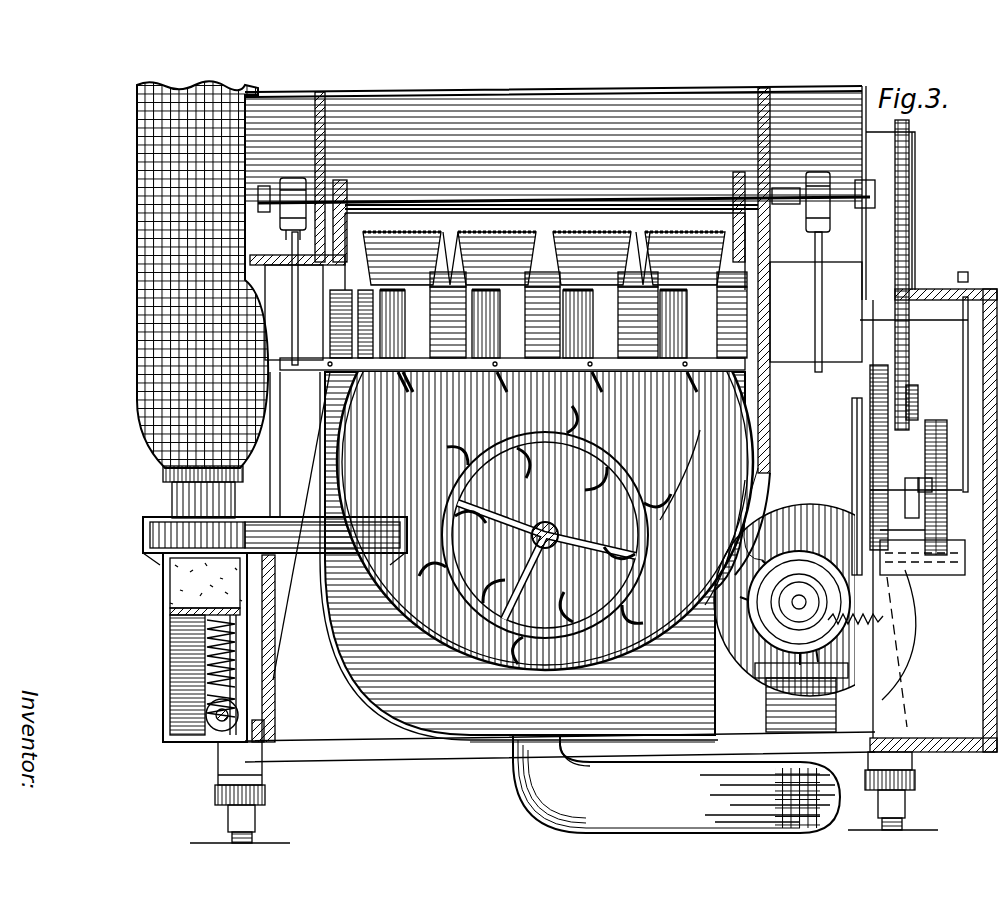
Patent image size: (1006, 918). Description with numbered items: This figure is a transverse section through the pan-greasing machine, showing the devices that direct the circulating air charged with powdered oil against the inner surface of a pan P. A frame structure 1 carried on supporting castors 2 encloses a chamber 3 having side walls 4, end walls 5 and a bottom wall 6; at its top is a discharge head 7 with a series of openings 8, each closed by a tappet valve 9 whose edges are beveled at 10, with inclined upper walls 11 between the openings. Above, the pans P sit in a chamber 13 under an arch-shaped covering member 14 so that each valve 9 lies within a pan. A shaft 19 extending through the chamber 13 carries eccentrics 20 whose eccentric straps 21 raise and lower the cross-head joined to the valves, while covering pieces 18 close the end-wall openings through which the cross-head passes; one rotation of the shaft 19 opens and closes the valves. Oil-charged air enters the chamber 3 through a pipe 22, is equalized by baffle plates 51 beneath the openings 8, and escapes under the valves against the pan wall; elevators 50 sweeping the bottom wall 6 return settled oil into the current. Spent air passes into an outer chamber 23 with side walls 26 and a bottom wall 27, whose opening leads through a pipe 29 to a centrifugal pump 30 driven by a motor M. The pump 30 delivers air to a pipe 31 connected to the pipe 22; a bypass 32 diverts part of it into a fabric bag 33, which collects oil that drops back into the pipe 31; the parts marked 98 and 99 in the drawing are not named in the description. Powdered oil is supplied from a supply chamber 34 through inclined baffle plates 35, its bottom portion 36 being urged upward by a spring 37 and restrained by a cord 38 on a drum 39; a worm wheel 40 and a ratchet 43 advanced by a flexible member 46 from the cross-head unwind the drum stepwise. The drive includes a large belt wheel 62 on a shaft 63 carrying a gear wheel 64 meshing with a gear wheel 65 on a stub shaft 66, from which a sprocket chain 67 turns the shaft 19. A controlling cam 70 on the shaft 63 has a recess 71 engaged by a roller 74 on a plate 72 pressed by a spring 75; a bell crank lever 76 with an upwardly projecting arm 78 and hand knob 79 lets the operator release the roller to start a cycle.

The frame structure 1 is at (388, 752).
The supporting castors 2 is at (250, 820).
The chamber 3 is at (752, 430).
The side walls 4 is at (420, 415).
The end walls 5 is at (440, 432).
The bottom wall 6 is at (512, 668).
The discharge head 7 is at (748, 300).
The openings 8 is at (440, 290).
The valve 9 is at (432, 282).
The beveled edges 10 is at (534, 278).
The inclined upper walls 11 is at (450, 280).
The chamber 13 is at (700, 120).
The arch-shaped covering member 14 is at (495, 86).
The covering pieces 18 is at (332, 345).
The shaft 19 is at (740, 198).
The eccentrics 20 is at (293, 185).
The eccentric straps 21 is at (290, 222).
The pipe 22 is at (300, 533).
The chamber 23 is at (400, 672).
The side walls 26 is at (325, 572).
The bottom wall 27 is at (672, 735).
The pipe 29 is at (520, 775).
The centrifugal pump 30 is at (790, 520).
The pipe 31 is at (806, 598).
The bypass 32 is at (172, 493).
The fabric bag 33 is at (150, 174).
The supply chamber 34 is at (175, 590).
The inclined baffle plates 35 is at (168, 568).
The bottom portion 36 is at (172, 612).
The spring 37 is at (172, 684).
The cord 38 is at (172, 657).
The drum 39 is at (215, 730).
The worm wheel 40 is at (220, 770).
The ratchet 43 is at (266, 728).
The flexible member 46 is at (282, 408).
The elevators 50 is at (742, 490).
The baffle plates 51 is at (445, 440).
The large belt wheel 62 is at (852, 415).
The shaft 63 is at (900, 488).
The gear wheel 64 is at (884, 540).
The gear wheel 65 is at (870, 382).
The stub shaft 66 is at (856, 632).
The sprocket chain 67 is at (910, 258).
The controlling cam 70 is at (936, 424).
The recess 71 is at (940, 440).
The plate 72 is at (960, 480).
The roller 74 is at (920, 494).
The spring 75 is at (962, 575).
The bell crank lever 76 is at (928, 575).
The upwardly projecting arm 78 is at (965, 290).
The hand knob 79 is at (963, 283).
The bag collar 98 is at (258, 346).
The guide 99 is at (420, 458).
The motor M is at (805, 540).
The pans P is at (398, 240).